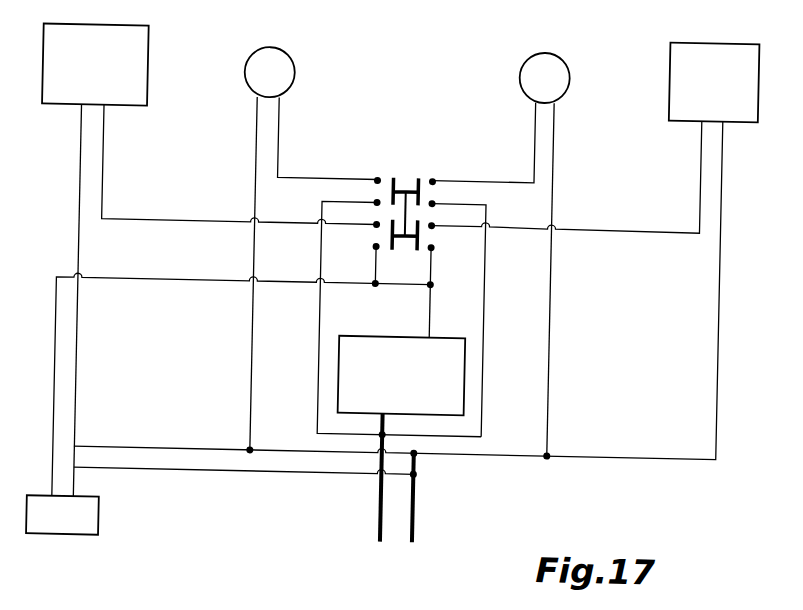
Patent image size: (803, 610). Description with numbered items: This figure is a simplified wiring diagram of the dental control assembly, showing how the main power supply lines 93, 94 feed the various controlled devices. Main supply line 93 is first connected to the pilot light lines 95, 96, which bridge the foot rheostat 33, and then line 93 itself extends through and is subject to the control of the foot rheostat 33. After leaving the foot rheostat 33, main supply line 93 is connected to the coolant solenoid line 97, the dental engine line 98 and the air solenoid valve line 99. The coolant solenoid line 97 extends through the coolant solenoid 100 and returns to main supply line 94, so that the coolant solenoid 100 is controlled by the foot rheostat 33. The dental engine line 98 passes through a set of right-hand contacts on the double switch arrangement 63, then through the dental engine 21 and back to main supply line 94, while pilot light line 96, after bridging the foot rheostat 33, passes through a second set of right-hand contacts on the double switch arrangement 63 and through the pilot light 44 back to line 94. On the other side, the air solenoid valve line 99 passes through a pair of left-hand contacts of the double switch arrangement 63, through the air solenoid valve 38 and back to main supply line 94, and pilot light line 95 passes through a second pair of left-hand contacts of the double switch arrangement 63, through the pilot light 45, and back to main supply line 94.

The dental engine 21 is at (674, 47).
The foot rheostat 33 is at (446, 349).
The air solenoid valve 38 is at (131, 103).
The pilot light 44 is at (565, 78).
The pilot light 45 is at (289, 70).
The double switch arrangement 63 is at (402, 184).
The main power supply line 93 is at (426, 318).
The main power supply line 94 is at (420, 520).
The pilot light line 95 is at (330, 179).
The pilot light line 96 is at (498, 180).
The coolant solenoid line 97 is at (286, 283).
The dental engine line 98 is at (432, 268).
The air solenoid valve line 99 is at (190, 222).
The coolant solenoid 100 is at (89, 536).